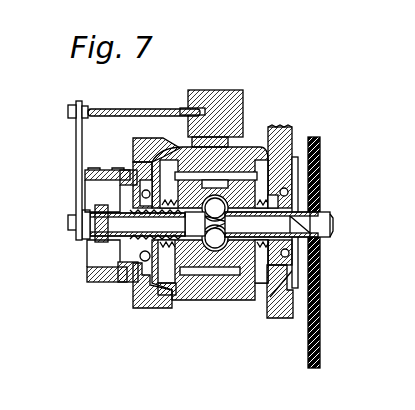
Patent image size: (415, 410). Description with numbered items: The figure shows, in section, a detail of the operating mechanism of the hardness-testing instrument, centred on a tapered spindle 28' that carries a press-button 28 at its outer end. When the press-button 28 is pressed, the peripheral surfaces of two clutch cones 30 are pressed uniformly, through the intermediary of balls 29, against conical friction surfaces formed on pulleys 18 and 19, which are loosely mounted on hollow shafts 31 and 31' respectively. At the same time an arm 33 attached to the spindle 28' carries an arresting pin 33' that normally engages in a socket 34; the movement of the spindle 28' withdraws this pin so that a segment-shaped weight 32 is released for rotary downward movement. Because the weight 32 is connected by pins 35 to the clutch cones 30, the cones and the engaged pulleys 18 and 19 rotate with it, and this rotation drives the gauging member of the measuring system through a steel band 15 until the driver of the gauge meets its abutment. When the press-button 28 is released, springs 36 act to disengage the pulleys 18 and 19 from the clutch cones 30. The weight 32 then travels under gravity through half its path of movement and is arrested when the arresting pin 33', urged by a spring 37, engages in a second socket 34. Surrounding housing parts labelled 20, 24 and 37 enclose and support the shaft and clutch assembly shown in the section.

The steel band 15 is at (280, 128).
The pulley 18 is at (283, 318).
The pulley 19 is at (97, 284).
The upper housing half 20 is at (88, 170).
The output shaft 24 is at (312, 218).
The press-button 28 is at (347, 225).
The spindle 28' is at (103, 238).
The balls 29 is at (213, 240).
The clutch cones 30 is at (248, 300).
The hollow shaft 31 is at (88, 244).
The hollow shaft 31' is at (231, 312).
The segment-shaped weight 32 is at (236, 102).
The arm 33 is at (60, 170).
The arresting pin 33' is at (134, 99).
The socket 34 is at (200, 108).
The pins 35 is at (290, 150).
The springs 36 is at (140, 310).
The spring 37 is at (123, 272).